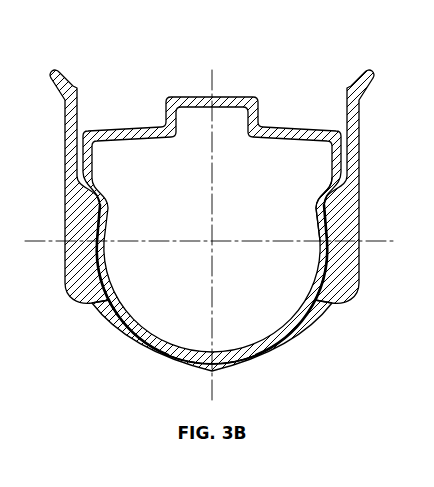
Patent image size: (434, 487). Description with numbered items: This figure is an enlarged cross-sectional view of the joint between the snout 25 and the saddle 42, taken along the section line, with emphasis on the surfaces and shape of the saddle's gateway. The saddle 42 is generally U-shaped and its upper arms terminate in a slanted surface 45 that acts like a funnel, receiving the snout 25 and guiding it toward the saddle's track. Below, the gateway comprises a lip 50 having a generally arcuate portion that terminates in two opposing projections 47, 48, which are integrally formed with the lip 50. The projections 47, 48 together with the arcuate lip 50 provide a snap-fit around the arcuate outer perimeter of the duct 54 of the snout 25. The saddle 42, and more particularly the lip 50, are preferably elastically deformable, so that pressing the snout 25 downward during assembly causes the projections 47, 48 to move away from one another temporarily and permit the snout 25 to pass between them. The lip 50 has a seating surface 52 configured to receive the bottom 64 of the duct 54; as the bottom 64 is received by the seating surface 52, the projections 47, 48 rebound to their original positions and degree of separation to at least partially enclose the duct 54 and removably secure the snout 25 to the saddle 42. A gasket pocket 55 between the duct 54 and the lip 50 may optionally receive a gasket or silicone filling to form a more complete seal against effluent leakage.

The snout 25 is at (190, 95).
The saddle 42 is at (78, 91).
The slanted surface 45 is at (362, 79).
The projection 47 is at (325, 203).
The projection 48 is at (99, 203).
The lip 50 is at (93, 258).
The seating surface 52 is at (132, 334).
The duct 54 is at (319, 220).
The gasket pocket 55 is at (173, 358).
The bottom 64 is at (301, 312).